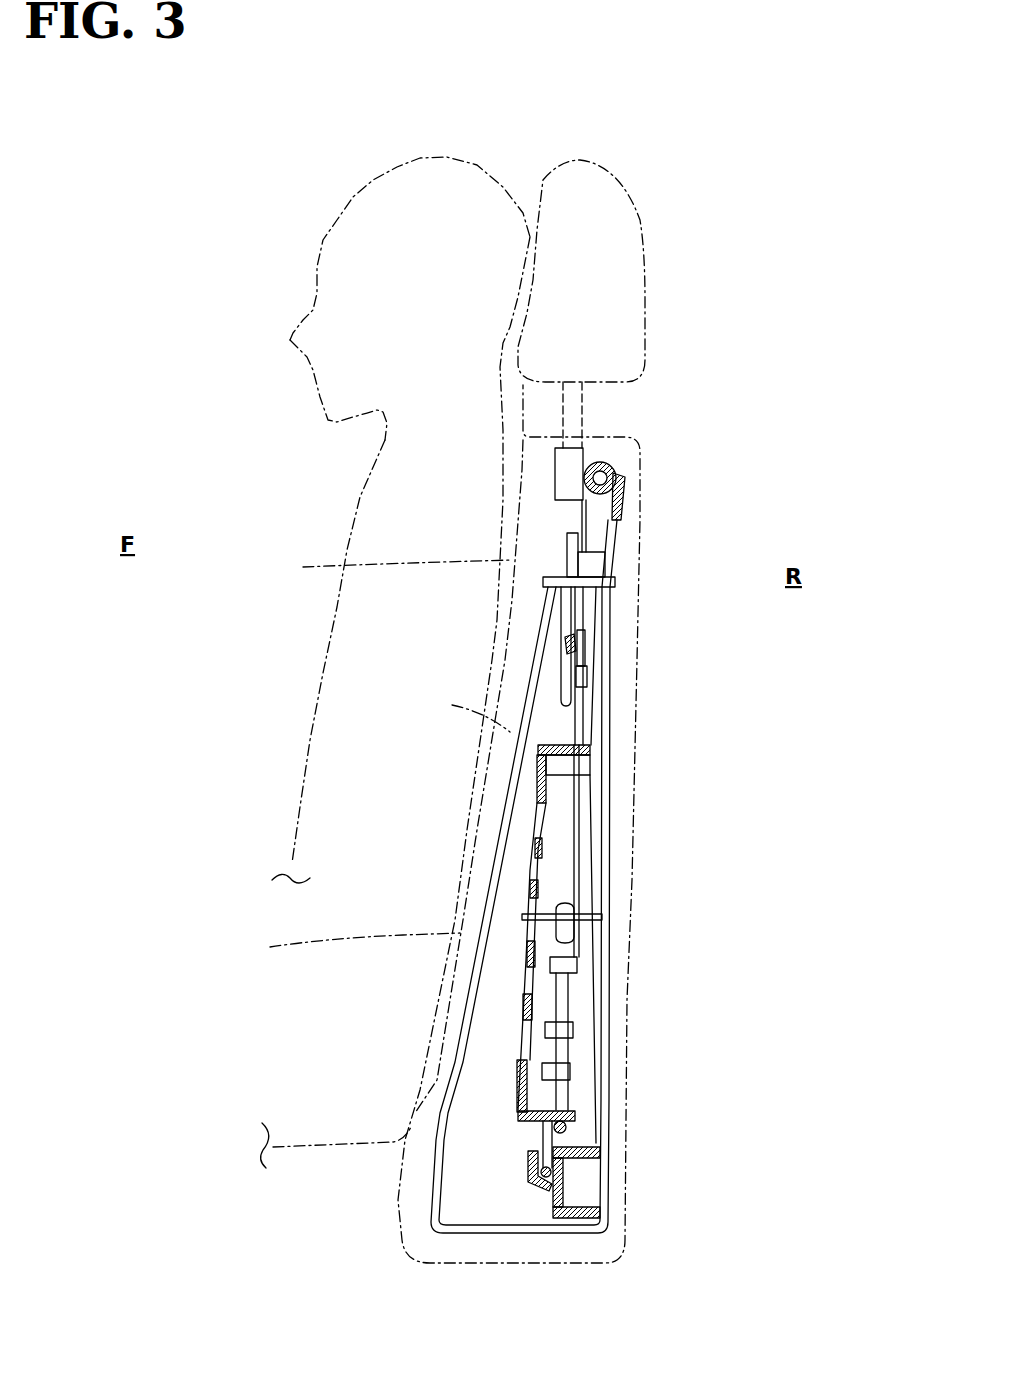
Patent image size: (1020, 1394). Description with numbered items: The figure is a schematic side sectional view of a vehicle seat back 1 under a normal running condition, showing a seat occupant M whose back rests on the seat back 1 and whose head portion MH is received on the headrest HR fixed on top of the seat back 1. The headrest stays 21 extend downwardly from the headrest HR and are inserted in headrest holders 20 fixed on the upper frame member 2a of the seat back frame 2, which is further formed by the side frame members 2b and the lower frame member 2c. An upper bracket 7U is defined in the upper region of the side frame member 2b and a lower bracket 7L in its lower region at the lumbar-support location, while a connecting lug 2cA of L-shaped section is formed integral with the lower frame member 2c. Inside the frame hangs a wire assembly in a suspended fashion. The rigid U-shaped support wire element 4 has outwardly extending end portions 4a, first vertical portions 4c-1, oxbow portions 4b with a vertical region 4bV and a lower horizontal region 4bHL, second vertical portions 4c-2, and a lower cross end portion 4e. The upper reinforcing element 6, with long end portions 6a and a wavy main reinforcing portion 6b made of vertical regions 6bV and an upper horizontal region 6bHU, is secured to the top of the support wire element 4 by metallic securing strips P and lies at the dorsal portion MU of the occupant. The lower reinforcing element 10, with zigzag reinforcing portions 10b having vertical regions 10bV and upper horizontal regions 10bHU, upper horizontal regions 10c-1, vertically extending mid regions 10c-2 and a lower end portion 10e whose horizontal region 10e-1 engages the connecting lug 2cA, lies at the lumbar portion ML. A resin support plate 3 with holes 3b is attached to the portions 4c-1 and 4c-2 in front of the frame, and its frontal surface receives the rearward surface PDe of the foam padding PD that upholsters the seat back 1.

The head portion MH is at (432, 157).
The headrest HR is at (597, 157).
The seat occupant M is at (357, 497).
The dorsal portion MU is at (386, 567).
The lumbar portion ML is at (345, 1050).
The seat back 1 is at (650, 472).
The seat back frame 2 is at (608, 697).
The upper frame member 2a is at (612, 466).
The side frame member 2b is at (603, 778).
The lower frame member 2c is at (553, 1212).
The connecting lug 2cA is at (528, 1176).
The support plate 3 is at (536, 795).
The holes 3b is at (541, 824).
The support wire element 4 is at (583, 807).
The outwardly horizontally extending end portion 4a is at (581, 632).
The oxbow portion 4b is at (588, 934).
The vertical region 4bV is at (578, 963).
The lower horizontal region 4bHL is at (562, 998).
The first rectilinearly-extending vertical portion 4c-1 is at (586, 713).
The second rectilinearly-extending vertical portion 4c-2 is at (560, 1052).
The lower cross end portion 4e is at (558, 1125).
The upper reinforcing element 6 is at (522, 611).
The long end portion 6a is at (563, 535).
The main reinforcing portion 6b is at (557, 678).
The upper horizontal region 6bHU is at (566, 648).
The vertical region 6bV is at (563, 668).
The upper bracket 7U is at (552, 572).
The lower bracket 7L is at (572, 918).
The lower reinforcing element 10 is at (493, 1003).
The reinforcing portion 10b is at (530, 913).
The upper horizontal region 10bHU is at (544, 906).
The vertical region 10bV is at (553, 933).
The upper horizontal region 10c-1 is at (560, 984).
The vertically-extending mid region 10c-2 is at (560, 1055).
The lower end portion 10e is at (510, 1143).
The horizontal region 10e-1 is at (532, 1152).
The headrest holder 20 is at (555, 472).
The headrest stay 21 is at (576, 412).
The securing strip P is at (588, 675).
The foam padding PD is at (490, 815).
The rearward surface PDe is at (453, 710).